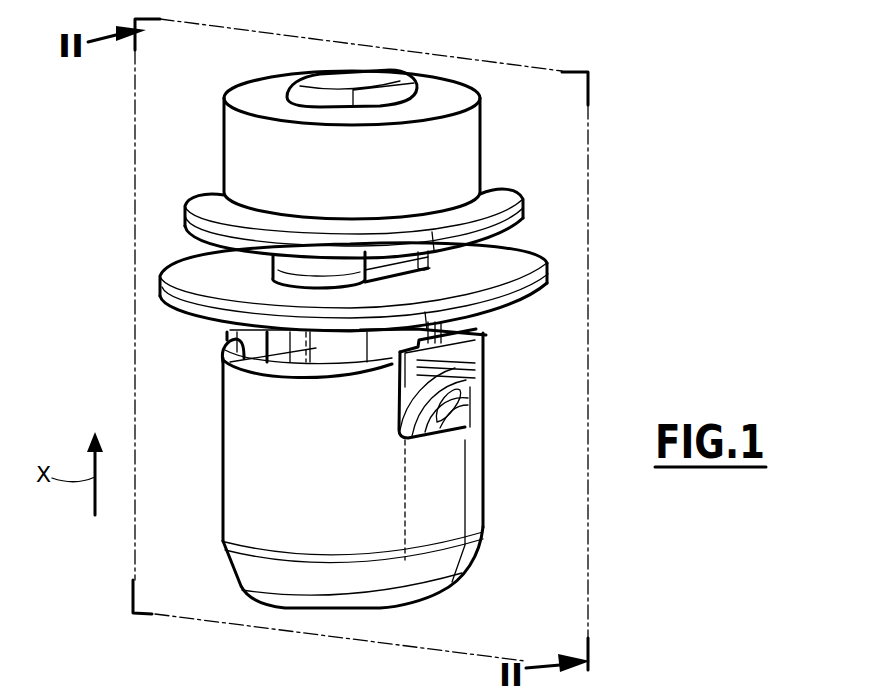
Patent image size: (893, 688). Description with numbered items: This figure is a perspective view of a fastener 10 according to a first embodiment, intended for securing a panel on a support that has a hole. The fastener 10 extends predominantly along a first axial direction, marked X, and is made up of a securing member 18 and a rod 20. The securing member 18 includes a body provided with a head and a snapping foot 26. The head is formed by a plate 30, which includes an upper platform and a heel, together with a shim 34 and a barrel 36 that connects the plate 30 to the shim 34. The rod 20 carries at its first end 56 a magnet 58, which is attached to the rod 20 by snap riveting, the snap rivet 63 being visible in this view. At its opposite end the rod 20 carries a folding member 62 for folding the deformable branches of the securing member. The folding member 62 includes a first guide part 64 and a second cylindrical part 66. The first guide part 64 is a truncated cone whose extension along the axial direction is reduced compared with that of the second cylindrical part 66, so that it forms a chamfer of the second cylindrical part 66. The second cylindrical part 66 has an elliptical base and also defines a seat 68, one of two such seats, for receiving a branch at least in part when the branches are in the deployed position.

The fastener 10 is at (616, 124).
The securing member 18 is at (258, 353).
The rod 20 is at (322, 535).
The snapping foot 26 is at (417, 383).
The plate 30 is at (535, 288).
The shim 34 is at (516, 212).
The barrel 36 is at (418, 256).
The first end 56 is at (410, 542).
The magnet 58 is at (456, 150).
The folding member 62 is at (437, 483).
The snap rivet 63 is at (367, 75).
The first guide part 64 is at (273, 513).
The second cylindrical part 66 is at (373, 582).
The seat 68 is at (472, 418).